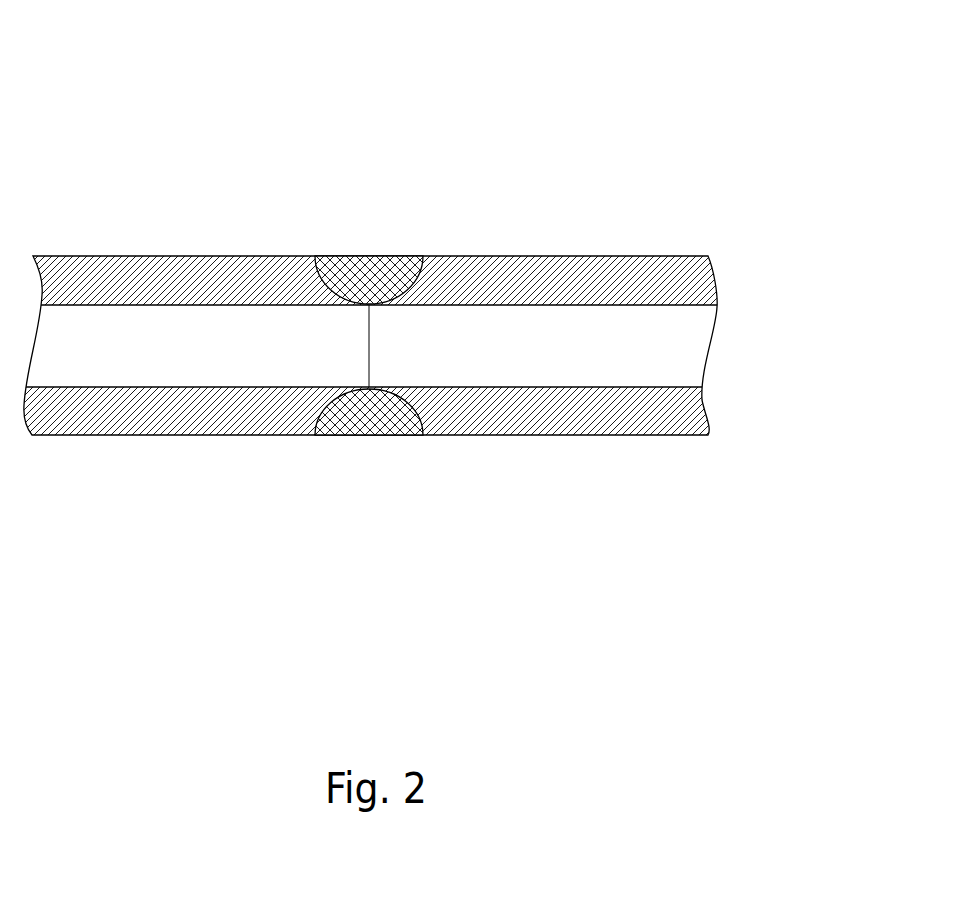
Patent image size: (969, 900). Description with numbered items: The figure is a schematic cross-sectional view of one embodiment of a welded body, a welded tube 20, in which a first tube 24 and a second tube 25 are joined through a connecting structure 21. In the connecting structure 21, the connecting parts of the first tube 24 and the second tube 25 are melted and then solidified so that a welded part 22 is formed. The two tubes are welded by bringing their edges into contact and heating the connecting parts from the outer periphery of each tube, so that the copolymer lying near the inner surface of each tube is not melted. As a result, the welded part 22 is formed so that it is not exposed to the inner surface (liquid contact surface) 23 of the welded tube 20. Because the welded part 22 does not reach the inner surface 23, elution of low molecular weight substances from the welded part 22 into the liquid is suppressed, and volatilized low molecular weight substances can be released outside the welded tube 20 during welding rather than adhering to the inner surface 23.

The welded tube 20 is at (557, 147).
The connecting structure 21 is at (343, 225).
The welded part 22 is at (377, 262).
The inner surface (liquid contact surface) 23 is at (205, 290).
The first tube 24 is at (131, 280).
The second tube 25 is at (597, 280).